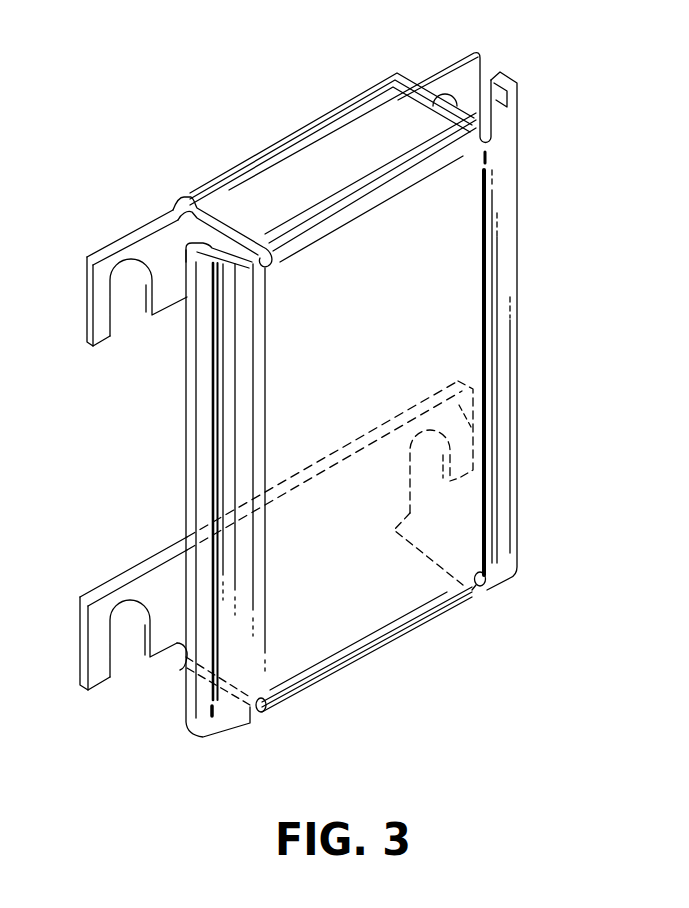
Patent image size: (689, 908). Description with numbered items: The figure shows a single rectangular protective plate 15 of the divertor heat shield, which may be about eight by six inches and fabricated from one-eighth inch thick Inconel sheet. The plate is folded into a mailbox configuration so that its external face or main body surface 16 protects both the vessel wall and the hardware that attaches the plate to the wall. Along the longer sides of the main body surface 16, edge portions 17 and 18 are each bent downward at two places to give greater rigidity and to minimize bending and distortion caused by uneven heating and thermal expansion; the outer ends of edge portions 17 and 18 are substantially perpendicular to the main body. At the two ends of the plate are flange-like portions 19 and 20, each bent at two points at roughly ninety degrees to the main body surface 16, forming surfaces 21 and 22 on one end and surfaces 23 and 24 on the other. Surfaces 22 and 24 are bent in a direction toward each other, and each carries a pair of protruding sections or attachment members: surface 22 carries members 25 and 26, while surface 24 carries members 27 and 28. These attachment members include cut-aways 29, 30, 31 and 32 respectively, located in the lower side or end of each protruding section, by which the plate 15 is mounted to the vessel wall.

The plate 15 is at (343, 371).
The main body surface 16 is at (372, 299).
The edge portion 17 is at (200, 518).
The edge portion 18 is at (505, 152).
The end flange-like portion 19 is at (165, 252).
The end flange-like portion 20 is at (248, 526).
The surface 21 is at (337, 171).
The surface 22 is at (207, 226).
The surface 23 is at (323, 621).
The surface 24 is at (350, 513).
The protruding section 25 is at (107, 266).
The protruding section 26 is at (468, 48).
The protruding section 27 is at (103, 610).
The protruding section 28 is at (457, 376).
The cut-away 29 is at (143, 290).
The cut-away 30 is at (445, 90).
The cut-away 31 is at (142, 633).
The cut-away 32 is at (417, 513).